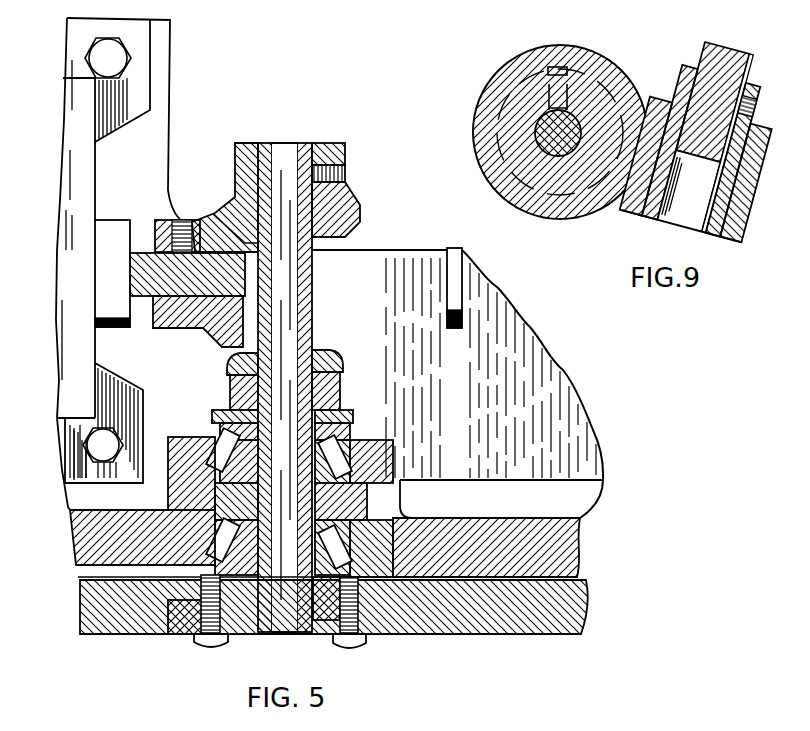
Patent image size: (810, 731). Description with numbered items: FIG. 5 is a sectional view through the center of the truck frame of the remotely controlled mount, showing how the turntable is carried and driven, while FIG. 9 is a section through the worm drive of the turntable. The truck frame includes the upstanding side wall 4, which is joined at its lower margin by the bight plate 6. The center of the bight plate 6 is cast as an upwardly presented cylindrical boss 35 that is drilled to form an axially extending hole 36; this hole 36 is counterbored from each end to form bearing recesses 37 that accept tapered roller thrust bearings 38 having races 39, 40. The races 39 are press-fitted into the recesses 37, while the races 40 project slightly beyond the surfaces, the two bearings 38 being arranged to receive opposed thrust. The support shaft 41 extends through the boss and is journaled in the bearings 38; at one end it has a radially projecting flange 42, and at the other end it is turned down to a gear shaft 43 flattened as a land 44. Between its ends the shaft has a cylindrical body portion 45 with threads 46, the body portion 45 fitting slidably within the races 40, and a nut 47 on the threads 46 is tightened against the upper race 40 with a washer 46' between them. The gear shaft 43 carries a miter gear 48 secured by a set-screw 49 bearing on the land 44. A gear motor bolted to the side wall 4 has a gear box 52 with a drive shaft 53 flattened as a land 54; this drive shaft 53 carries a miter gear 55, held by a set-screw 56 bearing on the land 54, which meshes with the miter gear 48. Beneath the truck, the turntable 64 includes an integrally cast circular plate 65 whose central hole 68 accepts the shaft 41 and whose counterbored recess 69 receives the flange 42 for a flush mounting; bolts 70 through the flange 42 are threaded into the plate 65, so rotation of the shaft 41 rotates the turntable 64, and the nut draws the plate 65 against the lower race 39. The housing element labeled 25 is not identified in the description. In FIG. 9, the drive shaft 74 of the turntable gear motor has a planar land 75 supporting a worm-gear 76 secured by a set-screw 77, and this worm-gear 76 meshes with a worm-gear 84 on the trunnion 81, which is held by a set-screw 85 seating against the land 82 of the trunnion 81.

In FIG. 5, the side wall 4 is at (170, 87).
In FIG. 5, the gear box 52 is at (97, 168).
In FIG. 5, the drive shaft 53 is at (133, 270).
In FIG. 5, the set-screw 56 is at (180, 222).
In FIG. 5, the gear shaft 43 is at (256, 163).
In FIG. 5, the land 54 is at (225, 232).
In FIG. 5, the miter gear 55 is at (190, 330).
In FIG. 5, the support shaft 41 is at (285, 142).
In FIG. 5, the radially projecting flange 42 is at (300, 633).
In FIG. 5, the cylindrical body portion 45 is at (313, 305).
In FIG. 5, the land 44 is at (316, 143).
In FIG. 5, the set-screw 49 is at (345, 172).
In FIG. 5, the miter gear 48 is at (355, 212).
In FIG. 5, the housing 25 is at (578, 430).
In FIG. 5, the threads 46 is at (301, 359).
In FIG. 5, the nut 47 is at (340, 382).
In FIG. 5, the washer 46' is at (302, 406).
In FIG. 5, the bearing race 40 is at (348, 433).
In FIG. 5, the bearing recess 37 is at (372, 441).
In FIG. 5, the cylindrical boss 35 is at (394, 457).
In FIG. 5, the hole 36 is at (318, 502).
In FIG. 5, the tapered roller thrust bearing 38 is at (198, 426).
In FIG. 5, the bearing race 39 is at (200, 525).
In FIG. 5, the bight plate 6 is at (575, 549).
In FIG. 5, the turntable 64 is at (514, 643).
In FIG. 5, the circular plate 65 is at (120, 628).
In FIG. 5, the hole 68 is at (318, 588).
In FIG. 5, the bolt 70 is at (200, 643).
In FIG. 5, the recess 69 is at (395, 632).
In FIG. 9, the worm-gear 84 is at (512, 62).
In FIG. 9, the trunnion 81 is at (535, 135).
In FIG. 9, the land 82 is at (568, 108).
In FIG. 9, the set-screw 85 is at (560, 68).
In FIG. 9, the drive shaft 74 is at (705, 42).
In FIG. 9, the planar land 75 is at (730, 153).
In FIG. 9, the worm-gear 76 is at (748, 226).
In FIG. 9, the set-screw 77 is at (752, 106).